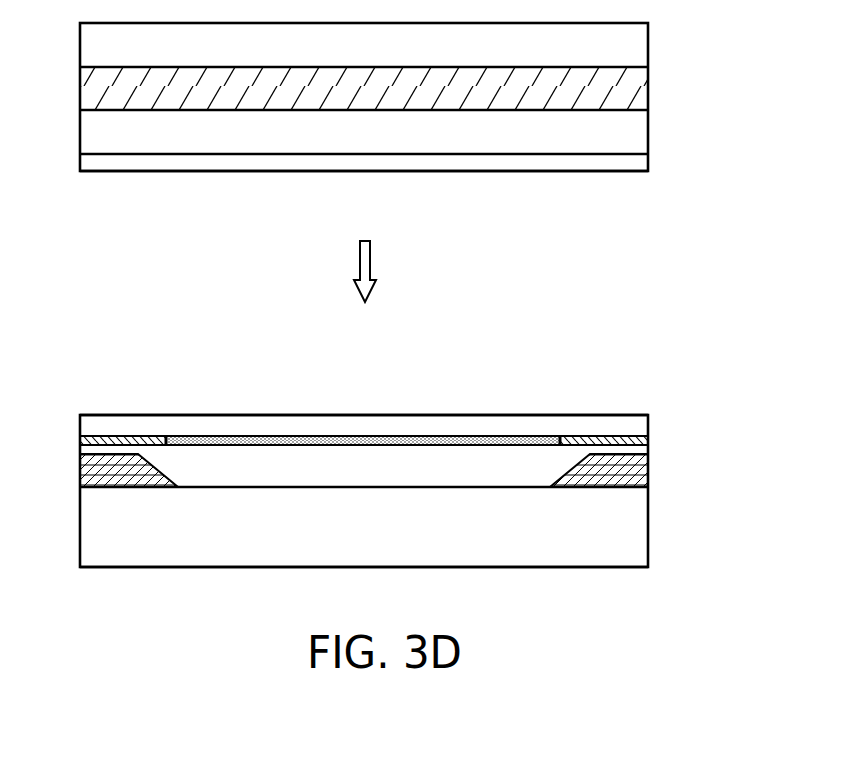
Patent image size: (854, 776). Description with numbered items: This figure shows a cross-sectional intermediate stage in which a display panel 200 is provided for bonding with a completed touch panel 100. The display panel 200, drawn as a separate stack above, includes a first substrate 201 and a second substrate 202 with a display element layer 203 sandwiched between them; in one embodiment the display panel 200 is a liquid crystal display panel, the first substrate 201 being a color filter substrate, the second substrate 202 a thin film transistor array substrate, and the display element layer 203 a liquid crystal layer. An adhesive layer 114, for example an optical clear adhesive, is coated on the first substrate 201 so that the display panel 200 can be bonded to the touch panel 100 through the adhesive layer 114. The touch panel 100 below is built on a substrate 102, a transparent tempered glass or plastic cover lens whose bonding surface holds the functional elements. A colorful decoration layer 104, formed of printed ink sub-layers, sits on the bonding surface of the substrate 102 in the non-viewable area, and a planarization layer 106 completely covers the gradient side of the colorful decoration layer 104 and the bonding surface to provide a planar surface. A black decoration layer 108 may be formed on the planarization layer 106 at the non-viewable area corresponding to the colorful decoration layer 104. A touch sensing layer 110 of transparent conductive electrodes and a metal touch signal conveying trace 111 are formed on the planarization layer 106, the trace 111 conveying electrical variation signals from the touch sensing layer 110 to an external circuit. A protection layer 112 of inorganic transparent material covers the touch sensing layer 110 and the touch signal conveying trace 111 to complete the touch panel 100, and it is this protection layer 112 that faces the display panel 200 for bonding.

The touch panel 100 is at (565, 370).
The substrate 102 is at (623, 530).
The colorful decoration layer 104 is at (100, 476).
The planarization layer 106 is at (622, 450).
The black decoration layer 108 is at (123, 436).
The touch sensing layer 110 is at (493, 435).
The touch signal conveying trace 111 is at (603, 434).
The protection layer 112 is at (257, 414).
The adhesive layer 114 is at (100, 160).
The display panel 200 is at (720, 27).
The first substrate 201 is at (626, 126).
The second substrate 202 is at (628, 44).
The display element layer 203 is at (634, 90).